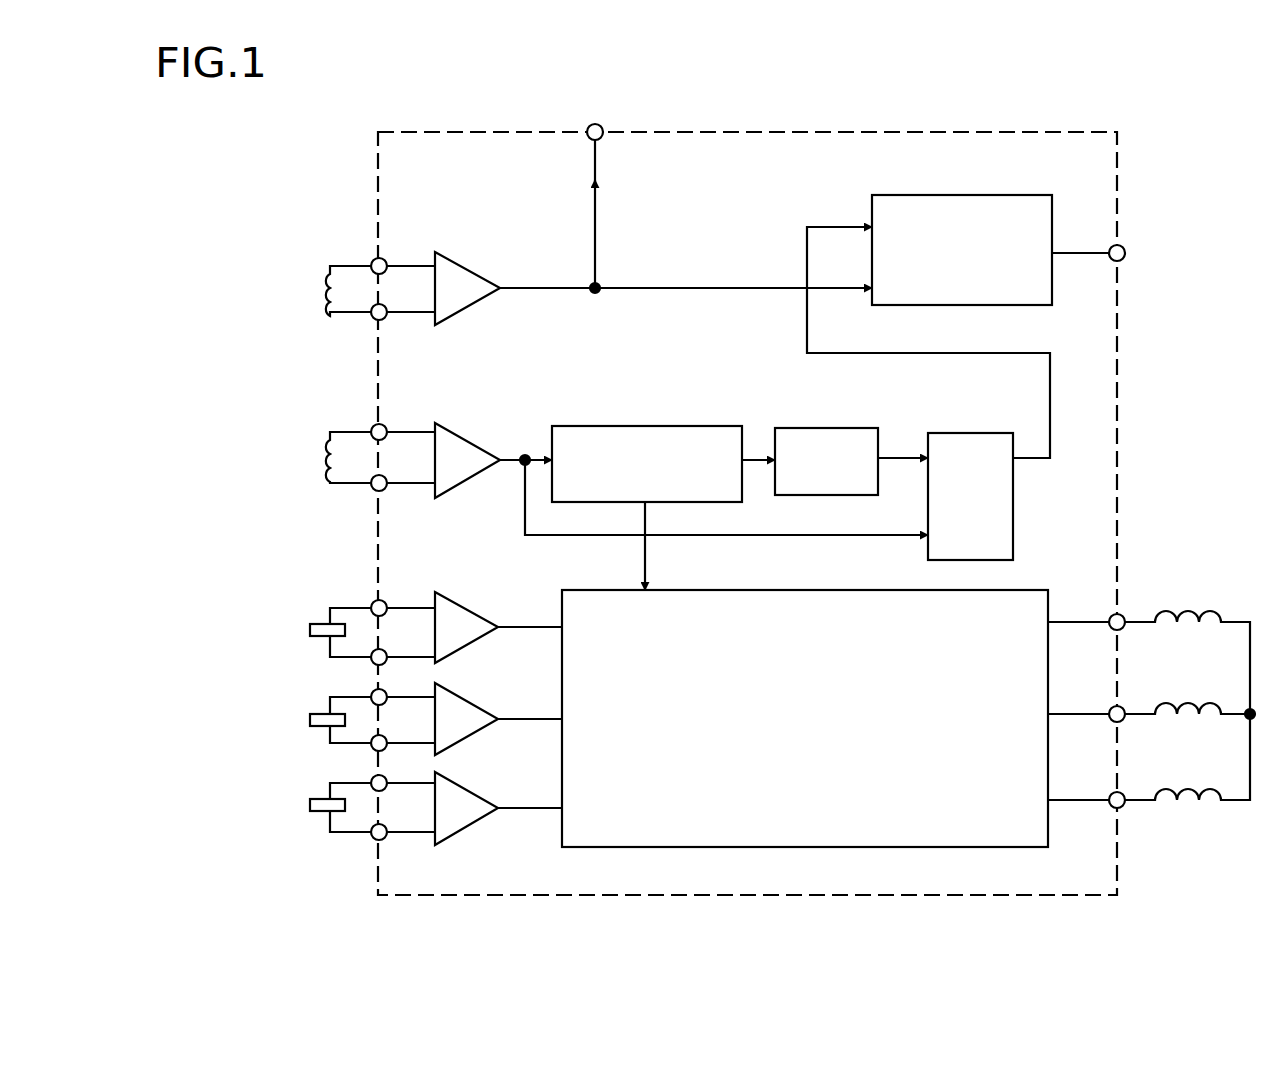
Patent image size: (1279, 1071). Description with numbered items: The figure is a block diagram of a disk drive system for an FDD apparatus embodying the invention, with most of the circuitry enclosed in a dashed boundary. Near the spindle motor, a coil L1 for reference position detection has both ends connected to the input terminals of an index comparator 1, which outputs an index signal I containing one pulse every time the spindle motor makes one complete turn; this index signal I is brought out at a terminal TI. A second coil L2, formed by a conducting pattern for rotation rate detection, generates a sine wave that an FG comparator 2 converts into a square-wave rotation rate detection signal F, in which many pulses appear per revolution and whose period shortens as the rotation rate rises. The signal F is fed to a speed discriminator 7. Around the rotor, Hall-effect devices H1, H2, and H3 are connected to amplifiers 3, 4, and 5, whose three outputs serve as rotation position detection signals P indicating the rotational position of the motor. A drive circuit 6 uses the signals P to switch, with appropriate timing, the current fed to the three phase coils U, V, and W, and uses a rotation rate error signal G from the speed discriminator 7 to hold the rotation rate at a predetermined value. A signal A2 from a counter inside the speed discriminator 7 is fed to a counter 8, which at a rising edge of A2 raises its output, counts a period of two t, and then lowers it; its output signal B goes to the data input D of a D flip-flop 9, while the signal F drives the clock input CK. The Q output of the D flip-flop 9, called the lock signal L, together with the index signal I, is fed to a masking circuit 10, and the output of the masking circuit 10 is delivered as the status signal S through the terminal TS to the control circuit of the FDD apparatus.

The index comparator 1 is at (478, 288).
The FG comparator 2 is at (468, 452).
The amplifier 3 is at (468, 620).
The amplifier 4 is at (466, 712).
The amplifier 5 is at (468, 800).
The drive circuit 6 is at (1035, 590).
The speed discriminator 7 is at (706, 426).
The counter 8 is at (848, 428).
The D flip-flop 9 is at (975, 433).
The masking circuit 10 is at (992, 195).
The coil for reference position detection L1 is at (320, 283).
The coil for rotation rate detection L2 is at (320, 450).
The Hall-effect device H1 is at (310, 630).
The Hall-effect device H2 is at (310, 720).
The Hall-effect device H3 is at (310, 805).
The index signal I is at (549, 284).
The terminal TI is at (603, 128).
The rotation rate detection signal F is at (519, 452).
The signal A2 is at (757, 455).
The signal B is at (891, 455).
The lock signal L is at (1050, 409).
The status signal S is at (1074, 250).
The terminal TS is at (1124, 247).
The rotation rate error signal G is at (650, 557).
The rotation position detection signals P is at (540, 806).
The coil U is at (1188, 605).
The coil V is at (1190, 697).
The coil W is at (1185, 783).